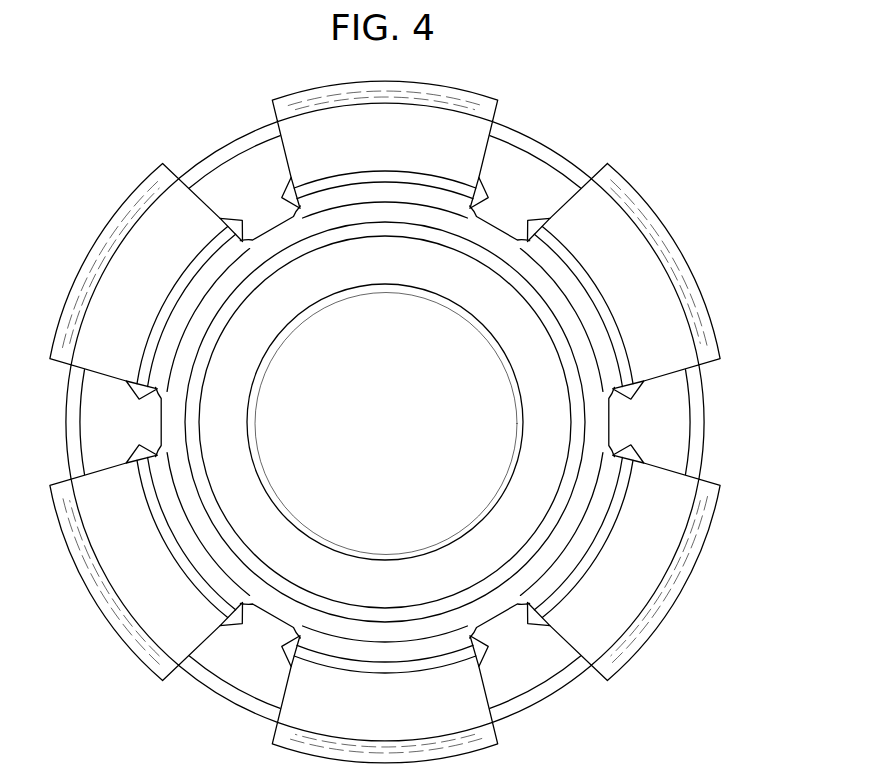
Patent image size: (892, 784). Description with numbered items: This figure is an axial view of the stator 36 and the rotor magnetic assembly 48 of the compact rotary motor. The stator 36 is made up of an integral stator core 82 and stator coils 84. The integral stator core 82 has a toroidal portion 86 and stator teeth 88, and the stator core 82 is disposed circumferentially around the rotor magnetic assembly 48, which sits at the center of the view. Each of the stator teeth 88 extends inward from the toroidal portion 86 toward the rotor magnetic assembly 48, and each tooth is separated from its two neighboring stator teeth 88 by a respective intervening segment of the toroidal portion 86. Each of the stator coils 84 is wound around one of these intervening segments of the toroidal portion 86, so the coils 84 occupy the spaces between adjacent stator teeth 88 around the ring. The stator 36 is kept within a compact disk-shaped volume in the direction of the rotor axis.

The stator 36 is at (667, 157).
The rotor magnetic assembly 48 is at (394, 271).
The integral stator core 82 is at (549, 136).
The stator coils 84 is at (399, 145).
The toroidal portion 86 is at (259, 193).
The stator teeth 88 is at (262, 212).